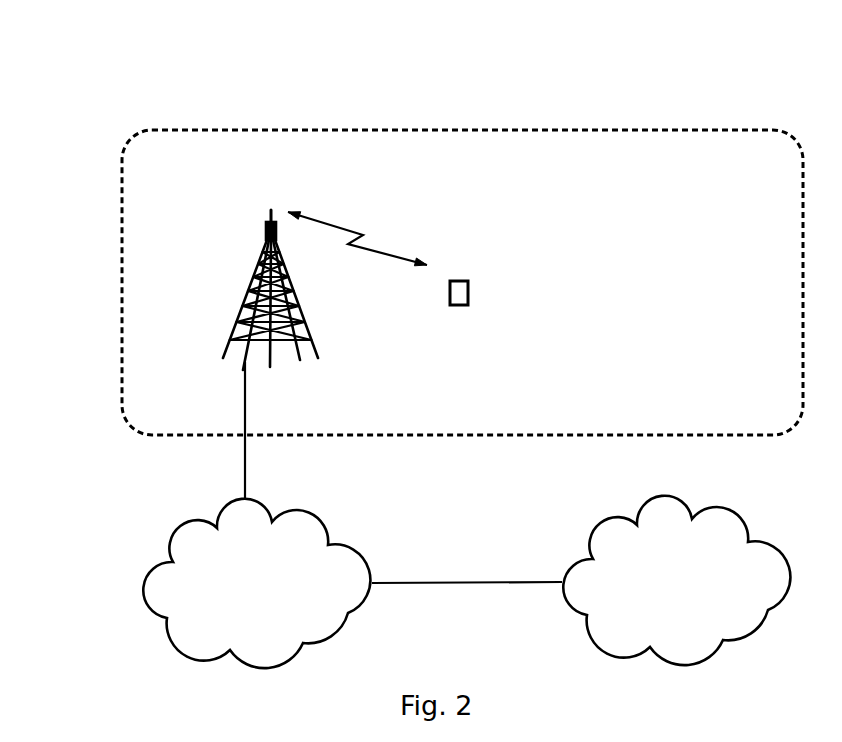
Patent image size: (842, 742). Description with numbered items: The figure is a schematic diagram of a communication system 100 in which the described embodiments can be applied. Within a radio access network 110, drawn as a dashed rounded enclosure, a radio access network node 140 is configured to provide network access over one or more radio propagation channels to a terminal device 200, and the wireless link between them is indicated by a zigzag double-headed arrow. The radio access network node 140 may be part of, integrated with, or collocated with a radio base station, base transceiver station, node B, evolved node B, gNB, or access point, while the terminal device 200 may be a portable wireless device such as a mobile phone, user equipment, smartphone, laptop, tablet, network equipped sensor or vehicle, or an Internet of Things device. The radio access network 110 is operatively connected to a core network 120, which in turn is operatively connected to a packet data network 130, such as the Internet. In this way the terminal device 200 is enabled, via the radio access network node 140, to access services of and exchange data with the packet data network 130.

The communication system 100 is at (212, 56).
The radio access network 110 is at (122, 270).
The core network 120 is at (229, 599).
The packet data network 130 is at (656, 598).
The radio access network node 140 is at (267, 227).
The terminal device 200 is at (470, 293).